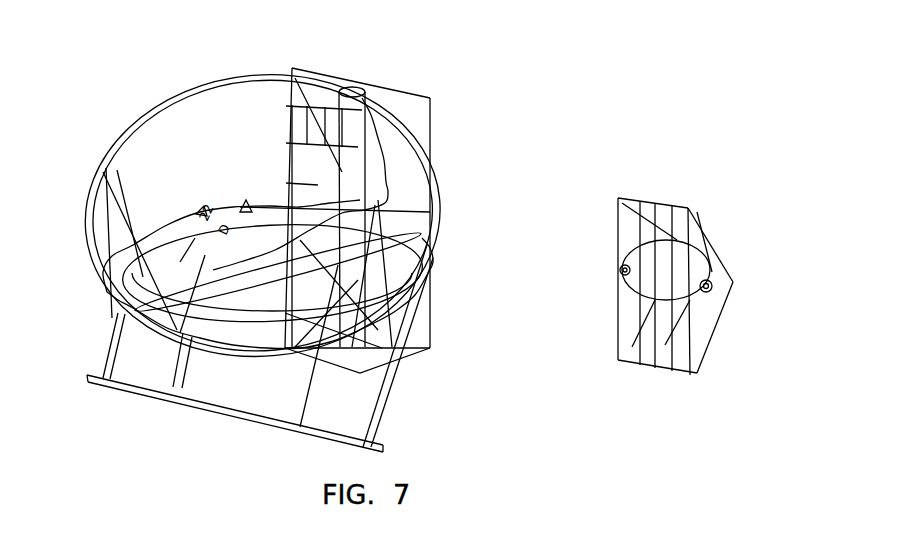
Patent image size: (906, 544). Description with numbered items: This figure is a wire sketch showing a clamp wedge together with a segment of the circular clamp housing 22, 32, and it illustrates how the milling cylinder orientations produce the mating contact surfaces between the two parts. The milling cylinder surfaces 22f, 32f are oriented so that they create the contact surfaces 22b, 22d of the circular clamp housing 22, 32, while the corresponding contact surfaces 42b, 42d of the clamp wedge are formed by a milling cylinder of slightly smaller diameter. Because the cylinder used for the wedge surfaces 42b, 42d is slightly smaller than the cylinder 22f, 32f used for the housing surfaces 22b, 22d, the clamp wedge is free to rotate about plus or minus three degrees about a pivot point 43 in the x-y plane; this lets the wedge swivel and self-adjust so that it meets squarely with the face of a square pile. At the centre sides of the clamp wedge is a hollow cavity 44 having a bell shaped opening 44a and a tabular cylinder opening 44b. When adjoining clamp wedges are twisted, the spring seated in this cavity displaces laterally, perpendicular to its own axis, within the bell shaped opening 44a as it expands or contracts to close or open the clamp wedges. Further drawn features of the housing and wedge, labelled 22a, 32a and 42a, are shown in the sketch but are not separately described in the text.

The circular clamp housing 22 is at (405, 202).
The ring portion 22a is at (243, 211).
The contact surface of the circular clamp housing 22b is at (433, 193).
The contact surface of the circular clamp housing 22d is at (410, 294).
The milling cylinder surface 22f is at (263, 191).
The pivot point 43 is at (434, 237).
The circular clamp housing 32 is at (306, 382).
The base legs 32a is at (156, 381).
The milling cylinder surface 32f is at (235, 432).
The bracket side wall 42a is at (601, 303).
The contact surface of the clamp wedge 42b is at (716, 272).
The contact surface of the clamp wedge 42d is at (749, 306).
The hollow cavity 44 is at (607, 301).
The bell shaped opening 44a is at (757, 274).
The tabular cylinder opening 44b is at (717, 246).